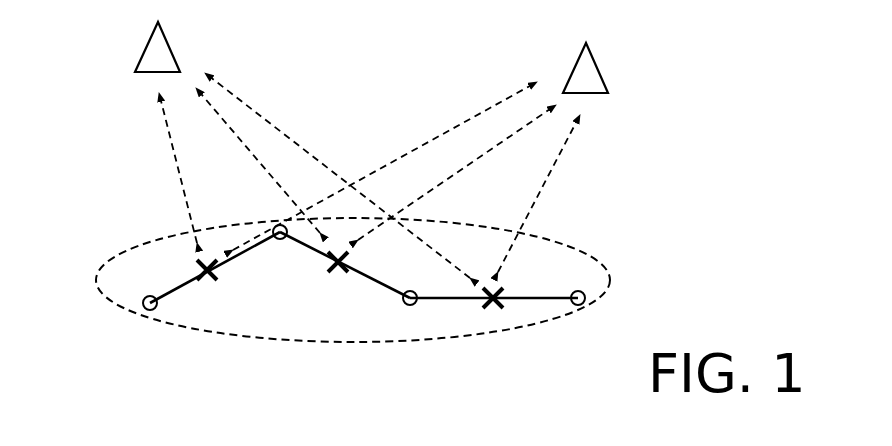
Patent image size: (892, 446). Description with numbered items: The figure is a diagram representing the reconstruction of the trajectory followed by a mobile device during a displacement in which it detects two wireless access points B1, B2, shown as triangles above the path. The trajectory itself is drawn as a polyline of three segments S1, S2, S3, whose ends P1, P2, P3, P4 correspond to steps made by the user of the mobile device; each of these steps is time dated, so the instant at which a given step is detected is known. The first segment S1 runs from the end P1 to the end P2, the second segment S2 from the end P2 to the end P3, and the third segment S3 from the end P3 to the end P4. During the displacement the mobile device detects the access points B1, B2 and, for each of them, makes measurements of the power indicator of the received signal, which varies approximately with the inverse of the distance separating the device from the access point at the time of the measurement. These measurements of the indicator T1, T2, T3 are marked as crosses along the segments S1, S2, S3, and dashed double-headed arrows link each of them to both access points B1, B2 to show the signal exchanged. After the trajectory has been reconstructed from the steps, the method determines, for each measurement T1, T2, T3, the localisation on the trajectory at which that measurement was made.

The wireless access point B1 is at (158, 52).
The wireless access point B2 is at (587, 70).
The trajectory segment S1 is at (177, 290).
The trajectory segment S2 is at (370, 283).
The trajectory segment S3 is at (533, 299).
The segment end P1 is at (144, 305).
The segment end P2 is at (280, 241).
The segment end P3 is at (413, 306).
The segment end P4 is at (580, 291).
The indicator measurement T1 is at (206, 282).
The indicator measurement T2 is at (338, 273).
The indicator measurement T3 is at (494, 305).